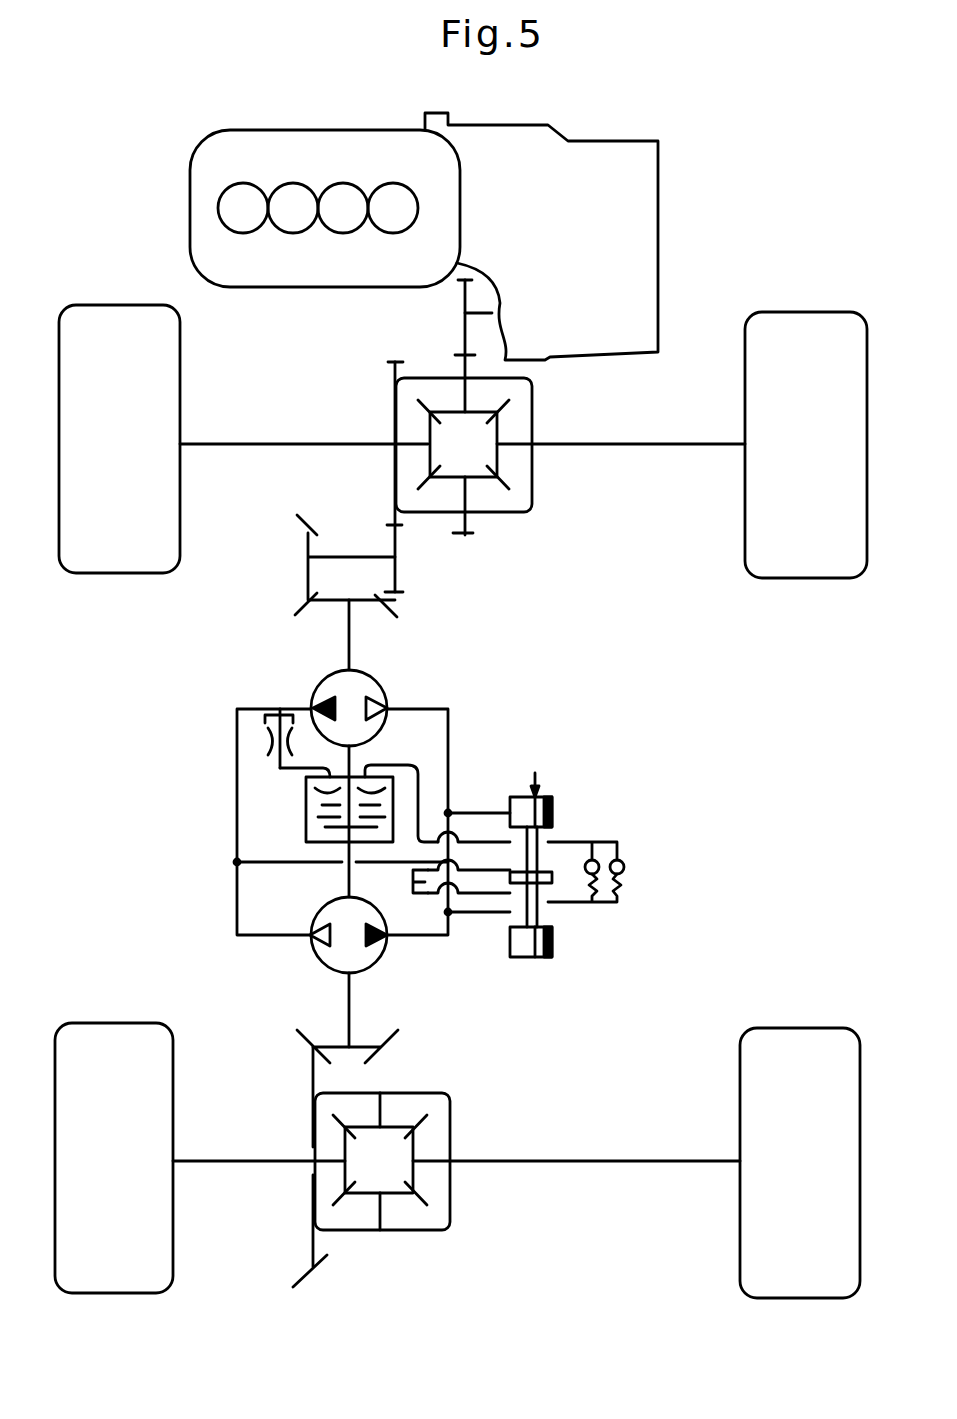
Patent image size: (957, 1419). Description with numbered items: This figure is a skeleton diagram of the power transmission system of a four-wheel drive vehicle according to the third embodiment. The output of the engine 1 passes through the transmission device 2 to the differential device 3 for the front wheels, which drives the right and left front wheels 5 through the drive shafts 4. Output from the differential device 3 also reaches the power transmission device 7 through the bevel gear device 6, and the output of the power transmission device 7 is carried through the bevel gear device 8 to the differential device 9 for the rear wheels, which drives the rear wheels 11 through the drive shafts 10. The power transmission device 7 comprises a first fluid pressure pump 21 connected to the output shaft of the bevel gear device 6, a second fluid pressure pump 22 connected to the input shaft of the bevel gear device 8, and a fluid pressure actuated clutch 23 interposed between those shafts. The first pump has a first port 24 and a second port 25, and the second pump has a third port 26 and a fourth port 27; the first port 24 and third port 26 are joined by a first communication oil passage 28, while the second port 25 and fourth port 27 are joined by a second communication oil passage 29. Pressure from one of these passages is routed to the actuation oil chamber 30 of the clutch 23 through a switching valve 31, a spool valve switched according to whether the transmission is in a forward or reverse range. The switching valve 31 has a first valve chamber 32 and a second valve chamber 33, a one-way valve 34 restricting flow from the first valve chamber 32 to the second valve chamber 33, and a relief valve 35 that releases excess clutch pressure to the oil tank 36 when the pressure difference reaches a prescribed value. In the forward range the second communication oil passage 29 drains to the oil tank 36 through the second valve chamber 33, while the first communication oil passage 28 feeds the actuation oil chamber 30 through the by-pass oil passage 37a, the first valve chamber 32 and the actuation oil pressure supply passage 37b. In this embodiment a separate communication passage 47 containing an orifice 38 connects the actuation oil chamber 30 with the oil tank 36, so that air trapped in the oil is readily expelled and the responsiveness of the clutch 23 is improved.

The engine 1 is at (330, 130).
The transmission device 2 is at (658, 217).
The differential device 3 is at (533, 412).
The drive shafts 4 is at (290, 444).
The front wheels 5 is at (132, 305).
The bevel gear device 6 is at (293, 588).
The power transmission device 7 is at (527, 740).
The bevel gear device 8 is at (387, 1053).
The differential device 9 is at (450, 1135).
The drive shafts 10 is at (238, 1162).
The rear wheels 11 is at (145, 1295).
The first fluid pressure pump 21 is at (373, 672).
The second fluid pressure pump 22 is at (327, 973).
The fluid pressure actuated clutch 23 is at (305, 800).
The first port 24 is at (313, 707).
The second port 25 is at (390, 707).
The third port 26 is at (308, 935).
The fourth port 27 is at (385, 935).
The first communication oil passage 28 is at (237, 782).
The second communication oil passage 29 is at (448, 920).
The actuation oil chamber 30 is at (367, 773).
The switching valve 31 is at (576, 872).
The first valve chamber 32 is at (543, 838).
The second valve chamber 33 is at (540, 910).
The one-way valve 34 is at (624, 867).
The relief valve 35 is at (607, 903).
The oil tank 36 is at (277, 710).
The by-pass oil passage 37a is at (280, 863).
The actuation oil pressure supply passage 37b is at (420, 793).
The orifice 38 is at (268, 735).
The communication passage 47 is at (268, 755).